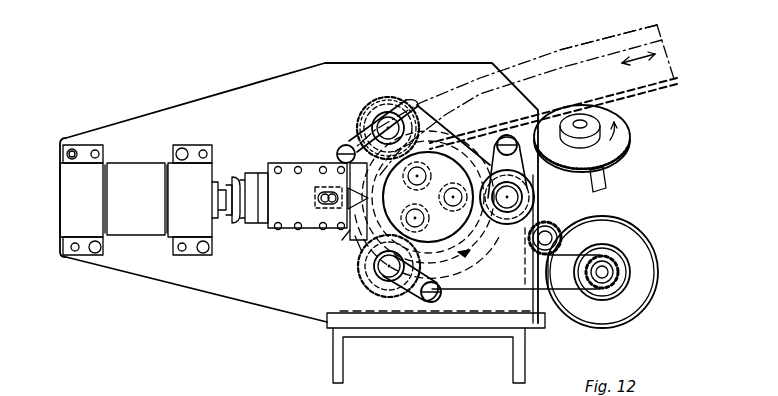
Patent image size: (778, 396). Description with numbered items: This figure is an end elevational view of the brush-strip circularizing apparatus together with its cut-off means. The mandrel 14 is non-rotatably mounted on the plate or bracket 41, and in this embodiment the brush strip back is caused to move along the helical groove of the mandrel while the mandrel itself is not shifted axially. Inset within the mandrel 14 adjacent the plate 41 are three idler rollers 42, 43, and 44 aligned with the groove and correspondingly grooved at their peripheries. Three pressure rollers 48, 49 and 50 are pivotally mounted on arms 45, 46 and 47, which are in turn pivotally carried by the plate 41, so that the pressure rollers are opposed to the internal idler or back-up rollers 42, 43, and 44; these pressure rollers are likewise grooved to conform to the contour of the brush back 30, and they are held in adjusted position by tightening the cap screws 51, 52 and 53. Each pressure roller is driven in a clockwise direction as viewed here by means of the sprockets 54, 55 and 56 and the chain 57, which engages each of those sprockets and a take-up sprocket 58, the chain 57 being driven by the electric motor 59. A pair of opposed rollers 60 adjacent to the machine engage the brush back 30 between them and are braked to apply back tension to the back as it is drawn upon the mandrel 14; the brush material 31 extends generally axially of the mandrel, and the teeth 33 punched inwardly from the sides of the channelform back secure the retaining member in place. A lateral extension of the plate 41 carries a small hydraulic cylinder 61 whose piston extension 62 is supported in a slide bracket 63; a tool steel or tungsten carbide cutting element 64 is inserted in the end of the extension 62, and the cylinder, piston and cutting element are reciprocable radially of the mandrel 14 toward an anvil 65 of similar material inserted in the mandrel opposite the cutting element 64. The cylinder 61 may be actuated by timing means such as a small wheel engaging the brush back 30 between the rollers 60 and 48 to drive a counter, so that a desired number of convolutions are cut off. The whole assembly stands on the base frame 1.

The base frame 1 is at (333, 353).
The mandrel 14 is at (465, 257).
The brush back 30 is at (668, 84).
The brush material 31 is at (617, 33).
The teeth 33 is at (657, 100).
The plate 41 is at (277, 80).
The idler roller 42 is at (437, 82).
The idler roller 43 is at (438, 246).
The idler roller 44 is at (455, 245).
The arm 45 is at (352, 140).
The arm 46 is at (530, 122).
The arm 47 is at (414, 300).
The pressure roller 48 is at (388, 100).
The pressure roller 49 is at (532, 192).
The pressure roller 50 is at (357, 283).
The cap screw 51 is at (340, 148).
The cap screw 52 is at (504, 134).
The cap screw 53 is at (431, 303).
The sprocket 54 is at (372, 100).
The sprocket 55 is at (522, 257).
The sprocket 56 is at (379, 300).
The chain 57 is at (489, 300).
The take-up sprocket 58 is at (562, 240).
The electric motor 59 is at (582, 312).
The rollers 60 is at (628, 150).
The hydraulic cylinder 61 is at (135, 185).
The piston extension 62 is at (250, 188).
The slide bracket 63 is at (287, 193).
The cutting element 64 is at (355, 236).
The anvil 65 is at (362, 252).